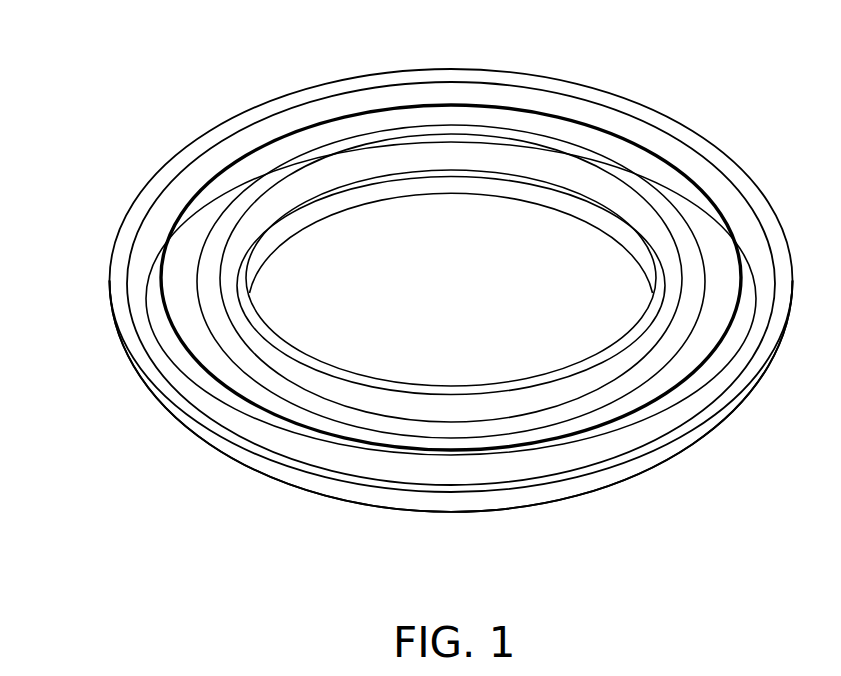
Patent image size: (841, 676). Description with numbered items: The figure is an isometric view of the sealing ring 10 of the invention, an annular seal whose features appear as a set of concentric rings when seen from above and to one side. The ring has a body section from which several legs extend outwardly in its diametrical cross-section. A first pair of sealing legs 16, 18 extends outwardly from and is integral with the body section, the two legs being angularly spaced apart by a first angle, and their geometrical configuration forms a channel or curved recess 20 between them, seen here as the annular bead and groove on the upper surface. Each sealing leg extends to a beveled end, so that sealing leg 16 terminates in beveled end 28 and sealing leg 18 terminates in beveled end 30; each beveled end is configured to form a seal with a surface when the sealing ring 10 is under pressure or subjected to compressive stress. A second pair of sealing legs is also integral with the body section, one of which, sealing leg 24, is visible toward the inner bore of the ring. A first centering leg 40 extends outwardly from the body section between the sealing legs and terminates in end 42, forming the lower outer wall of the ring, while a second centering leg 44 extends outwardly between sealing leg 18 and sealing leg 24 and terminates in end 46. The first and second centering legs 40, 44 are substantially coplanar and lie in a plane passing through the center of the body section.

The sealing ring 10 is at (155, 181).
The sealing leg 16 is at (257, 135).
The sealing leg 18 is at (257, 355).
The channel or curved recess 20 is at (178, 259).
The sealing leg 24 is at (383, 189).
The beveled end 28 is at (205, 140).
The beveled end 30 is at (333, 374).
The first centering leg 40 is at (209, 430).
The end 42 is at (306, 471).
The second centering leg 44 is at (546, 185).
The end 46 is at (498, 172).